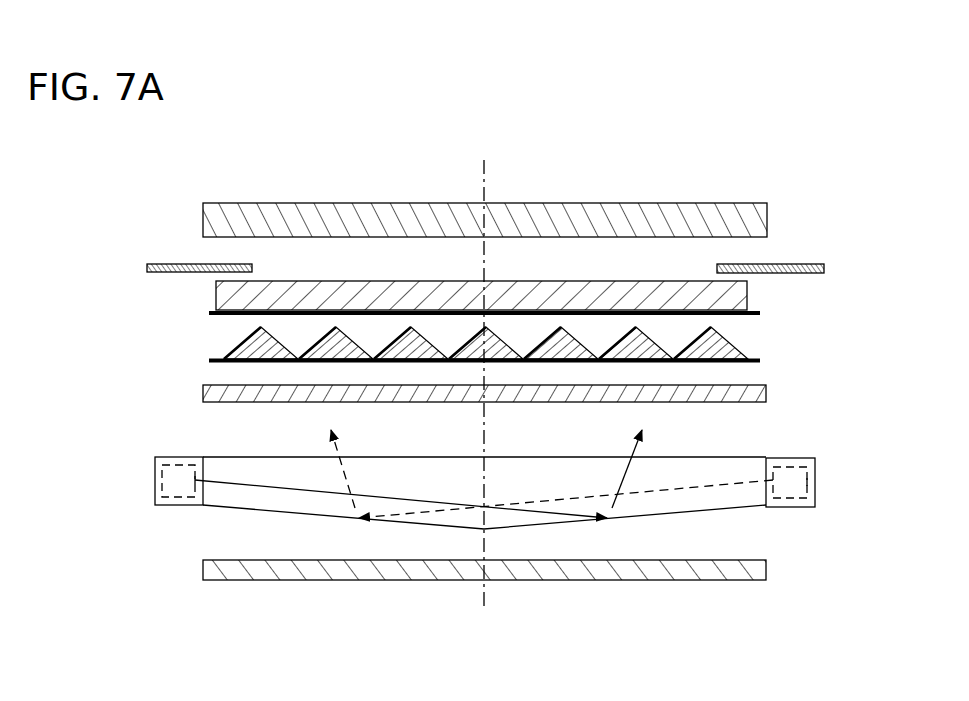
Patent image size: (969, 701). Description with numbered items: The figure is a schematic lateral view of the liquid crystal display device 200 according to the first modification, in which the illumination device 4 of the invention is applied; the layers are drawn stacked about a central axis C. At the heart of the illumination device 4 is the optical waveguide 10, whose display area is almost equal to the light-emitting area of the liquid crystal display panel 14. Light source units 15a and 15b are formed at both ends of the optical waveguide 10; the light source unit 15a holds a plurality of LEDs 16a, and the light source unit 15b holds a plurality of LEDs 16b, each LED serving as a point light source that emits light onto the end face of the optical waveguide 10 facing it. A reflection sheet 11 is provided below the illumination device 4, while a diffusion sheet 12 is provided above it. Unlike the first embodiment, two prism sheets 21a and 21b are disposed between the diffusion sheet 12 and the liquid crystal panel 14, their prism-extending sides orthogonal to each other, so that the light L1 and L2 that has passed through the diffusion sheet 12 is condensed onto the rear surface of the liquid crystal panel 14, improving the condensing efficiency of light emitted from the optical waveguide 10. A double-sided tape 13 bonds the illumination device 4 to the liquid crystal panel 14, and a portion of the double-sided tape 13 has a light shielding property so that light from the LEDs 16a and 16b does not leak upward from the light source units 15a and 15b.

The liquid crystal display device 200 is at (507, 80).
The center line C is at (482, 367).
The illumination device 4 is at (196, 446).
The optical waveguide 10 is at (730, 512).
The reflection sheet 11 is at (708, 581).
The diffusion sheet 12 is at (767, 397).
The double-sided tape 13 is at (186, 264).
The liquid crystal display panel 14 is at (750, 203).
The light source unit 15a is at (155, 478).
The light source unit 15b is at (815, 459).
The LED 16a is at (178, 497).
The LED 16b is at (808, 482).
The prism sheet 21a is at (232, 346).
The prism sheet 21b is at (216, 284).
The light L1 is at (552, 466).
The light L2 is at (435, 466).